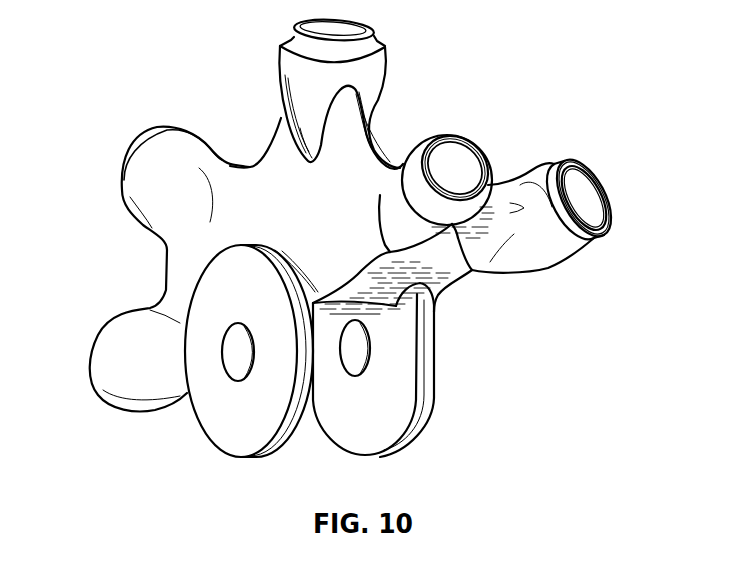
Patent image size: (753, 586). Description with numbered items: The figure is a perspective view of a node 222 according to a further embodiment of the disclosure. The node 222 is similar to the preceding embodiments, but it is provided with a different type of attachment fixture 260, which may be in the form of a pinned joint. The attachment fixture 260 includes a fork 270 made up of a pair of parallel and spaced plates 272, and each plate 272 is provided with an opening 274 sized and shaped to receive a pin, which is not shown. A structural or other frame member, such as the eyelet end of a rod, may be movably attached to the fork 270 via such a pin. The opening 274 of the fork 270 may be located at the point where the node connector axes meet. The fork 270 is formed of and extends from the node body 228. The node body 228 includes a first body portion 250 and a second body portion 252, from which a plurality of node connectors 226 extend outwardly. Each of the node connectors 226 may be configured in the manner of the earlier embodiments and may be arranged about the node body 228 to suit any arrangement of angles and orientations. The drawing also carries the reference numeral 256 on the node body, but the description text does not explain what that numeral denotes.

The node 222 is at (521, 80).
The node connector 226 is at (377, 73).
The node body 228 is at (333, 205).
The first body portion 250 is at (233, 168).
The second body portion 252 is at (473, 272).
The web 256 is at (253, 187).
The attachment fixture 260 is at (476, 432).
The fork 270 is at (412, 435).
The plate 272 is at (227, 443).
The opening 274 is at (360, 352).